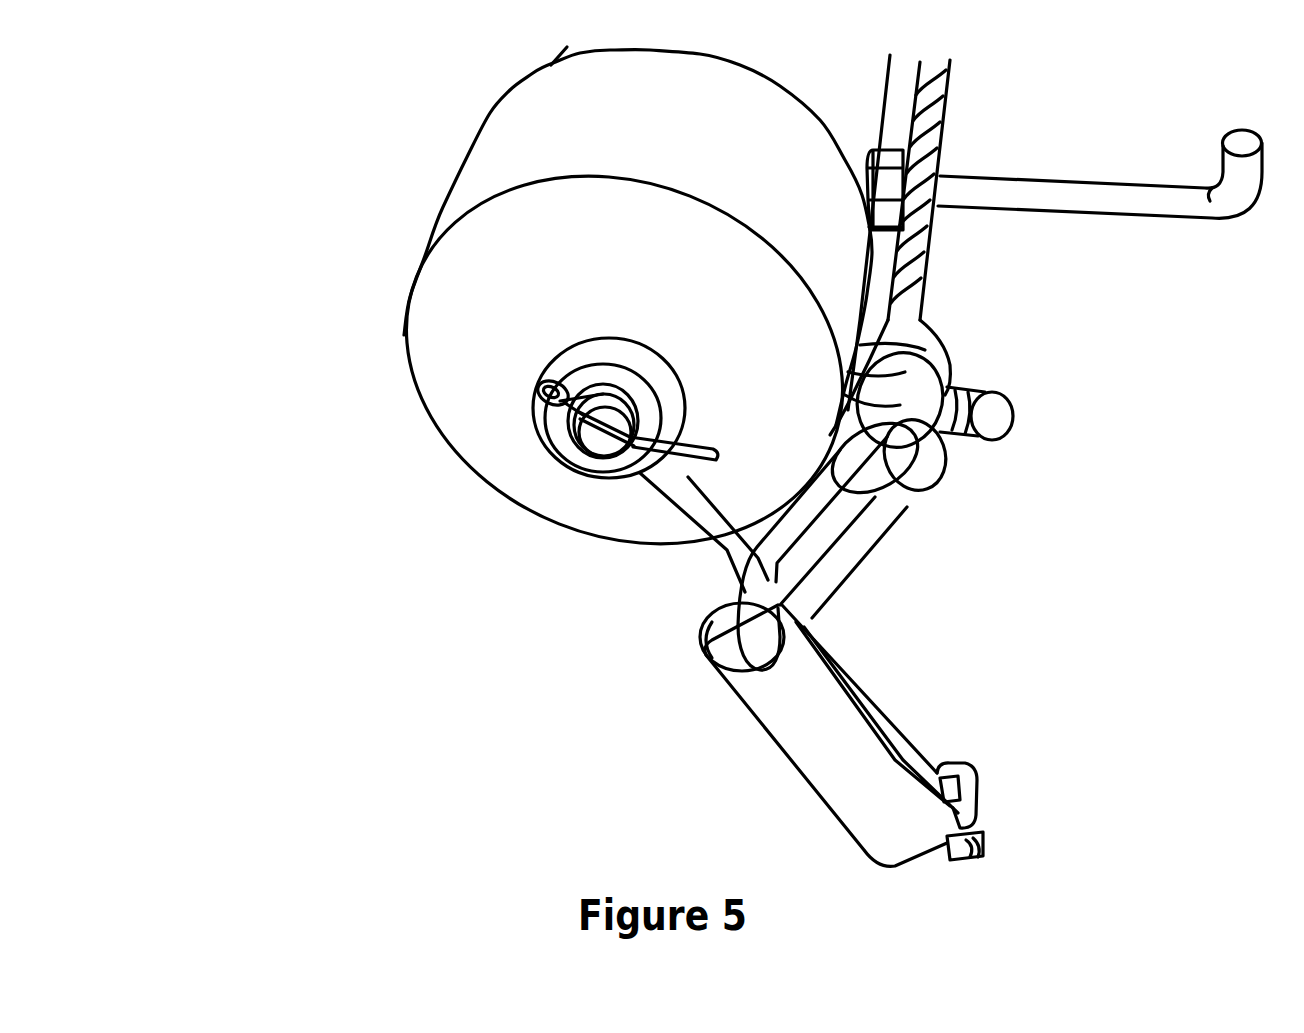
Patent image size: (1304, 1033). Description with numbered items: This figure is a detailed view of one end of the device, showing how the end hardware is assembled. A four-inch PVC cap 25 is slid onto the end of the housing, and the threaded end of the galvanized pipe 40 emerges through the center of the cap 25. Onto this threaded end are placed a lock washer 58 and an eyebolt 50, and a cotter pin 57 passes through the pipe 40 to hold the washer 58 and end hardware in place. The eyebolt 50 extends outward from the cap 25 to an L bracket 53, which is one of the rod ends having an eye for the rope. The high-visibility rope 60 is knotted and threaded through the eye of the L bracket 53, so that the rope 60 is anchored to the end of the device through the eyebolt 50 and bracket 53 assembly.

The PVC cap 25 is at (457, 302).
The galvanized pipe with threaded ends 40 is at (580, 407).
The eyebolt 50 is at (727, 547).
The L bracket with eye for rope 53 is at (893, 820).
The cotter pin 57 is at (705, 448).
The lock washer 58 is at (553, 440).
The rope 60 is at (912, 259).